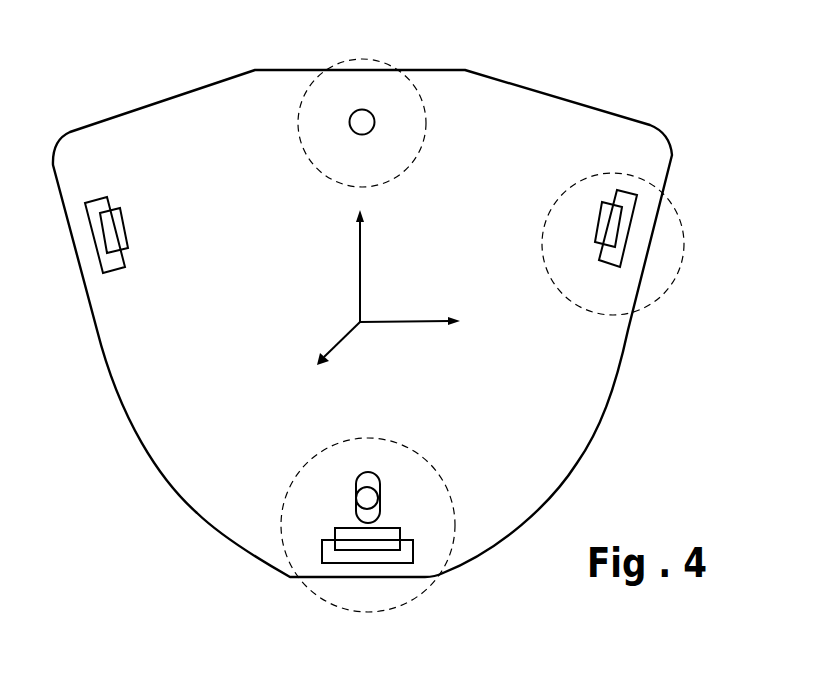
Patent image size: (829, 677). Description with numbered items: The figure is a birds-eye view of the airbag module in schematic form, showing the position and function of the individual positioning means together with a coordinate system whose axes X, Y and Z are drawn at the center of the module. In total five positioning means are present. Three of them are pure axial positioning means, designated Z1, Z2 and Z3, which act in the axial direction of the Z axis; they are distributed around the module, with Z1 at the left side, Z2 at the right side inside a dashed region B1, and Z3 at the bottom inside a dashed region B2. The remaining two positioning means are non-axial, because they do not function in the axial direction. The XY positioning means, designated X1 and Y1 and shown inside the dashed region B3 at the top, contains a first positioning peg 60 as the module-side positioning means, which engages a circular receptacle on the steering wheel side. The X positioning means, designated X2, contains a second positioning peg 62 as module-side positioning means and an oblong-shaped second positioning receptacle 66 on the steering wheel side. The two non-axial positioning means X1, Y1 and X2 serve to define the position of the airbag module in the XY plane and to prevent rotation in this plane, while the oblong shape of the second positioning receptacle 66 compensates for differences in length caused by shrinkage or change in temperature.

The first positioning peg 60 is at (355, 111).
The second positioning peg 62 is at (367, 500).
The second positioning receptacle 66 is at (362, 479).
The first mounting region B1 is at (662, 248).
The second mounting region B2 is at (358, 595).
The third mounting region B3 is at (383, 80).
The XY positioning means X1 is at (398, 106).
The XY positioning means Y1 is at (398, 141).
The X positioning means X2 is at (401, 496).
The axial positioning means Z1 is at (110, 250).
The axial positioning means Z2 is at (616, 246).
The axial positioning means Z3 is at (385, 547).
The X coordinate axis X is at (370, 263).
The Y coordinate axis Y is at (410, 305).
The Z coordinate axis Z is at (331, 343).